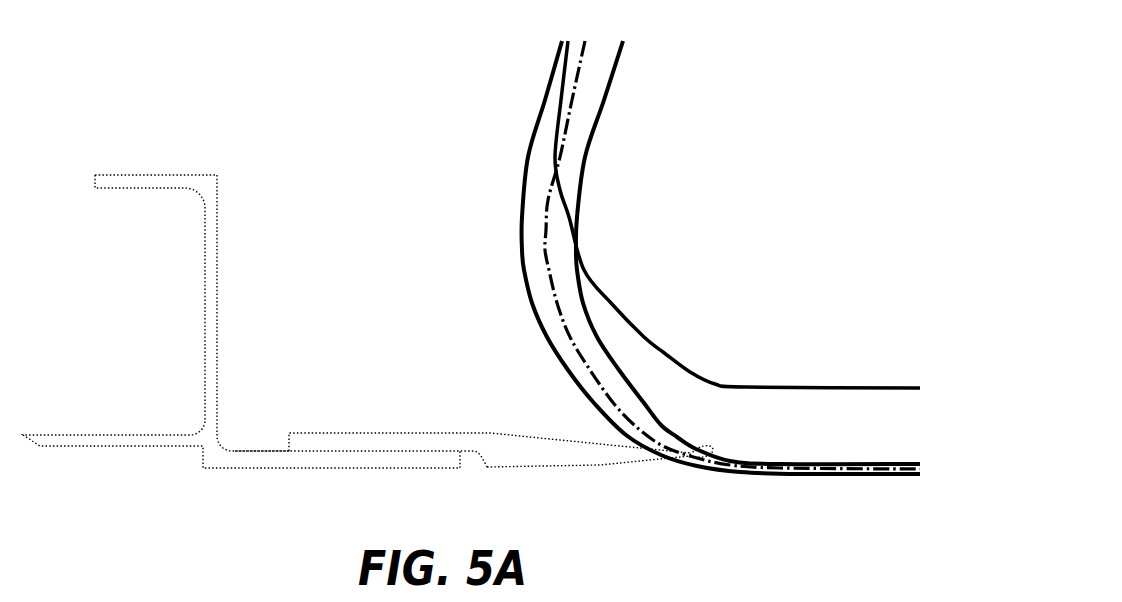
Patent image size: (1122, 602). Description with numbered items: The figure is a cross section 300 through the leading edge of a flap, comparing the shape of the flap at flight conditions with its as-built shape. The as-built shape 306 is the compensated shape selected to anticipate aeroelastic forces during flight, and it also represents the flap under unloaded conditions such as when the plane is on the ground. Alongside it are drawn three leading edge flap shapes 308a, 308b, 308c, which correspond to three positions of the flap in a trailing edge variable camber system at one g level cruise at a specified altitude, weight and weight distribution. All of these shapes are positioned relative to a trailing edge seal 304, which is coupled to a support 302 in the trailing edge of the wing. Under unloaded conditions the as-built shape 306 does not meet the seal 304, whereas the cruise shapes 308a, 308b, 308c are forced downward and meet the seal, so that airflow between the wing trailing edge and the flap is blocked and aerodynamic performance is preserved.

The assembly 300 is at (140, 88).
The support 302 is at (210, 262).
The trailing edge seal 304 is at (497, 450).
The as-built shape 306 is at (660, 350).
The leading edge flap shape 308a is at (548, 222).
The leading edge flap shape 308b is at (530, 165).
The leading edge flap shape 308c is at (587, 307).